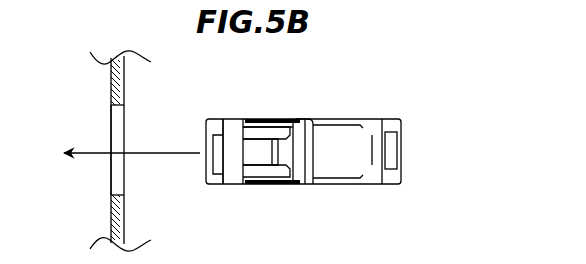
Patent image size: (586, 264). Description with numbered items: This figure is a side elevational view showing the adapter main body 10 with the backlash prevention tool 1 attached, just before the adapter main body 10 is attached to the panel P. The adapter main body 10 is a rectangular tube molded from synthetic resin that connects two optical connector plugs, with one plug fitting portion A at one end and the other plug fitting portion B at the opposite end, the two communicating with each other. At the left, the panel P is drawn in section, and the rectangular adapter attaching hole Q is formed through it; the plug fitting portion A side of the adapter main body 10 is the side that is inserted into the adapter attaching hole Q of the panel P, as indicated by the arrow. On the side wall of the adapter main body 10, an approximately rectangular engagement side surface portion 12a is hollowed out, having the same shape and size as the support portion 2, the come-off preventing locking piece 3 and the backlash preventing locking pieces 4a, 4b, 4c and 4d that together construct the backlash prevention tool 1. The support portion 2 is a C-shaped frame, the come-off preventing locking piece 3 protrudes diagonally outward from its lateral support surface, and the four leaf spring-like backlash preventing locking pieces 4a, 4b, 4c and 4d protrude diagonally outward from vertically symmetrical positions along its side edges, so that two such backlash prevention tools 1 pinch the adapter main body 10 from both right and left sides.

The backlash prevention tool 1 is at (247, 117).
The support portion 2 is at (232, 188).
The come-off preventing locking piece 3 is at (260, 152).
The backlash preventing locking piece 4a is at (278, 119).
The backlash preventing locking piece 4b is at (293, 120).
The backlash preventing locking piece 4c is at (296, 178).
The backlash preventing locking piece 4d is at (281, 186).
The adapter main body 10 is at (410, 124).
The engagement side surface portion 12a is at (372, 165).
The panel P is at (111, 90).
The adapter attaching hole Q is at (111, 107).
The plug fitting portion A is at (203, 172).
The plug fitting portion B is at (407, 168).